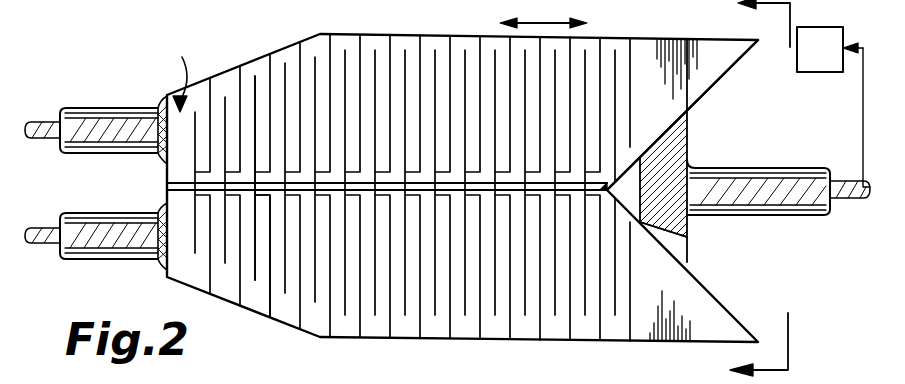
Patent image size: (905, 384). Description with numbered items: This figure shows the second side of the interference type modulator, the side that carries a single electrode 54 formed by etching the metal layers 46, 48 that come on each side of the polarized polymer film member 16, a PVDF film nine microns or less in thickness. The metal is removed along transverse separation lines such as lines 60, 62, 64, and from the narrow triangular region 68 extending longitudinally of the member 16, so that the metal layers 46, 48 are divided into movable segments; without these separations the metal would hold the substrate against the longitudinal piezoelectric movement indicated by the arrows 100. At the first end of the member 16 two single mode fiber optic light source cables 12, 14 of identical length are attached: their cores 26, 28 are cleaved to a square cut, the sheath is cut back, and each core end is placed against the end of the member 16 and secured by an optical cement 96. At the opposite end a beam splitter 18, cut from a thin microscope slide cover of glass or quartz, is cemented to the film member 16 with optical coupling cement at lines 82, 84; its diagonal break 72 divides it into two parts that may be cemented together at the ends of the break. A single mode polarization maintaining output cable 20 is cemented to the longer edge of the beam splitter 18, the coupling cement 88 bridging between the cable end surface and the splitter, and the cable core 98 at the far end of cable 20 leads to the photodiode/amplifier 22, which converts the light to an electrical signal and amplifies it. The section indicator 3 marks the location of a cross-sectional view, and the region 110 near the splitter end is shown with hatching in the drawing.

The fiber optic light source cable 12 is at (100, 243).
The fiber optic light source cable 14 is at (90, 114).
The polarized polymer film member 16 is at (281, 40).
The beam splitter 18 is at (758, 162).
The polarization maintaining fiber optic cable 20 is at (807, 168).
The photodiode/amplifier 22 is at (830, 49).
The cable core 26 is at (45, 245).
The cable core 28 is at (43, 139).
The metal layer 46 is at (150, 126).
The metal layer 48 is at (427, 47).
The single electrode 54 is at (189, 69).
The transverse separation line 60 is at (255, 276).
The transverse separation line 62 is at (258, 274).
The transverse separation line 64 is at (190, 168).
The narrow triangular region 68 is at (600, 182).
The diagonal break 72 is at (688, 239).
The cement line 82 is at (670, 258).
The cement line 84 is at (676, 128).
The coupling cement 88 is at (708, 190).
The optical cement 96 is at (148, 252).
The cable core 98 is at (850, 200).
The arrows 100 is at (540, 20).
The hatched region 110 is at (693, 170).
The section line 3- 3 is at (777, 192).